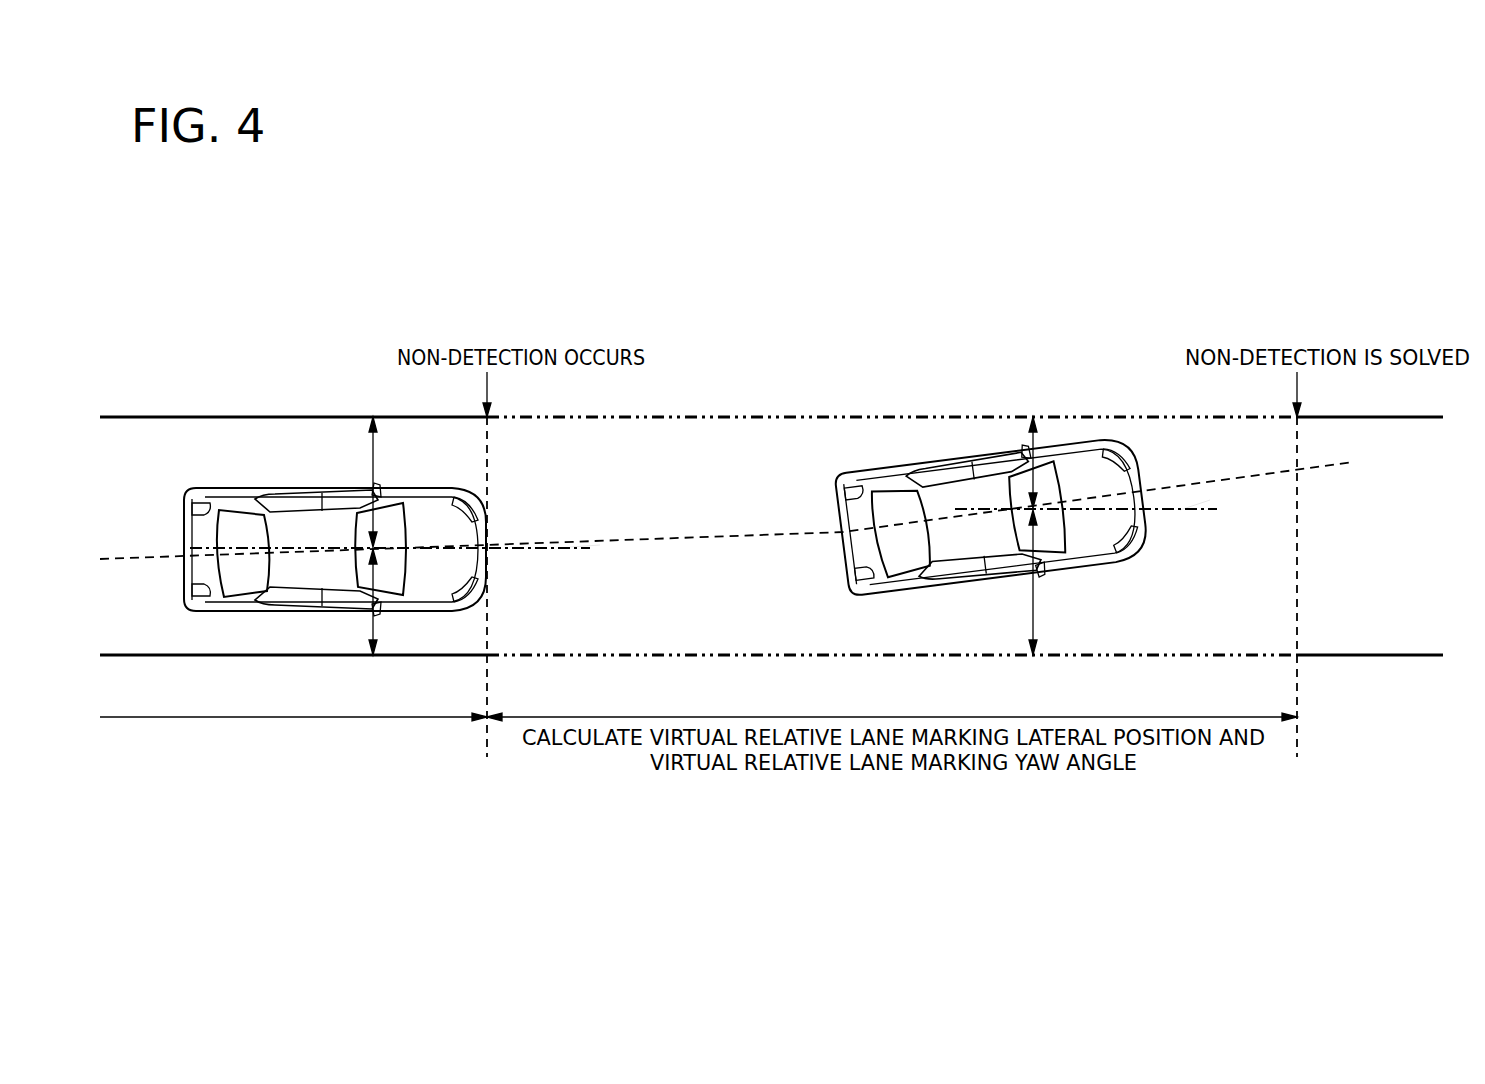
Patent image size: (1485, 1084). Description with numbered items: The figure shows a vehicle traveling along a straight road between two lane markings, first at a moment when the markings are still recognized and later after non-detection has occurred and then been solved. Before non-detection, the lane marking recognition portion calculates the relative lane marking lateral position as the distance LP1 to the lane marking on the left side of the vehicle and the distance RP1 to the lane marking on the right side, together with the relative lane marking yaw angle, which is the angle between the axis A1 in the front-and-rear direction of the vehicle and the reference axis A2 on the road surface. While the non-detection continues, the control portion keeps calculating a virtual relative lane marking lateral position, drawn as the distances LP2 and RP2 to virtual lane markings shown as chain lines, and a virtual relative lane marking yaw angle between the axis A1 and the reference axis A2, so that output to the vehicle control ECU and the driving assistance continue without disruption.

The relative lane marking lateral position (left) LP1 is at (372, 462).
The relative lane marking lateral position (right) RP1 is at (372, 632).
The virtual relative lane marking lateral position (left) LP2 is at (1032, 446).
The virtual relative lane marking lateral position (right) RP2 is at (1032, 612).
The axis in a front-and-rear direction of the vehicle A1 is at (702, 536).
The reference axis on the road surface A2 is at (596, 548).